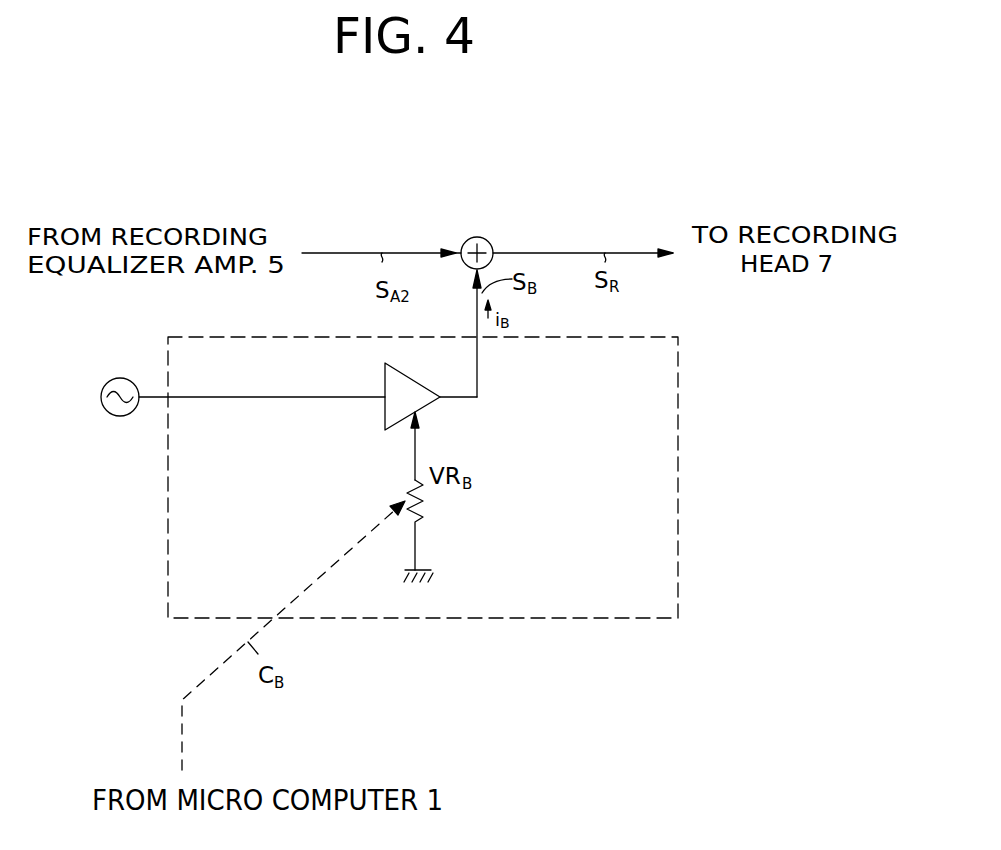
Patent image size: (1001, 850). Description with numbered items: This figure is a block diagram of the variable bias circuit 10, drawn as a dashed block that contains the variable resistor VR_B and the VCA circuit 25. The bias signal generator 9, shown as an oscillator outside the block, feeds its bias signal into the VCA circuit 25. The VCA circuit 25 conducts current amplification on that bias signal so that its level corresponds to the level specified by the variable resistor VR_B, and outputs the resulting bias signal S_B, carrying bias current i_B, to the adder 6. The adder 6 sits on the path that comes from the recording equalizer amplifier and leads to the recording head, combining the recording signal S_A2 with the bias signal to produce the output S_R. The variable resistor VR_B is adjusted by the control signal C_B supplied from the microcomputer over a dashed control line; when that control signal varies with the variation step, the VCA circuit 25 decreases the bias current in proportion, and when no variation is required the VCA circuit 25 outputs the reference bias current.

The adder 6 is at (477, 237).
The bias signal generator 9 is at (113, 377).
The variable bias circuit 10 is at (638, 337).
The VCA circuit 25 is at (408, 377).